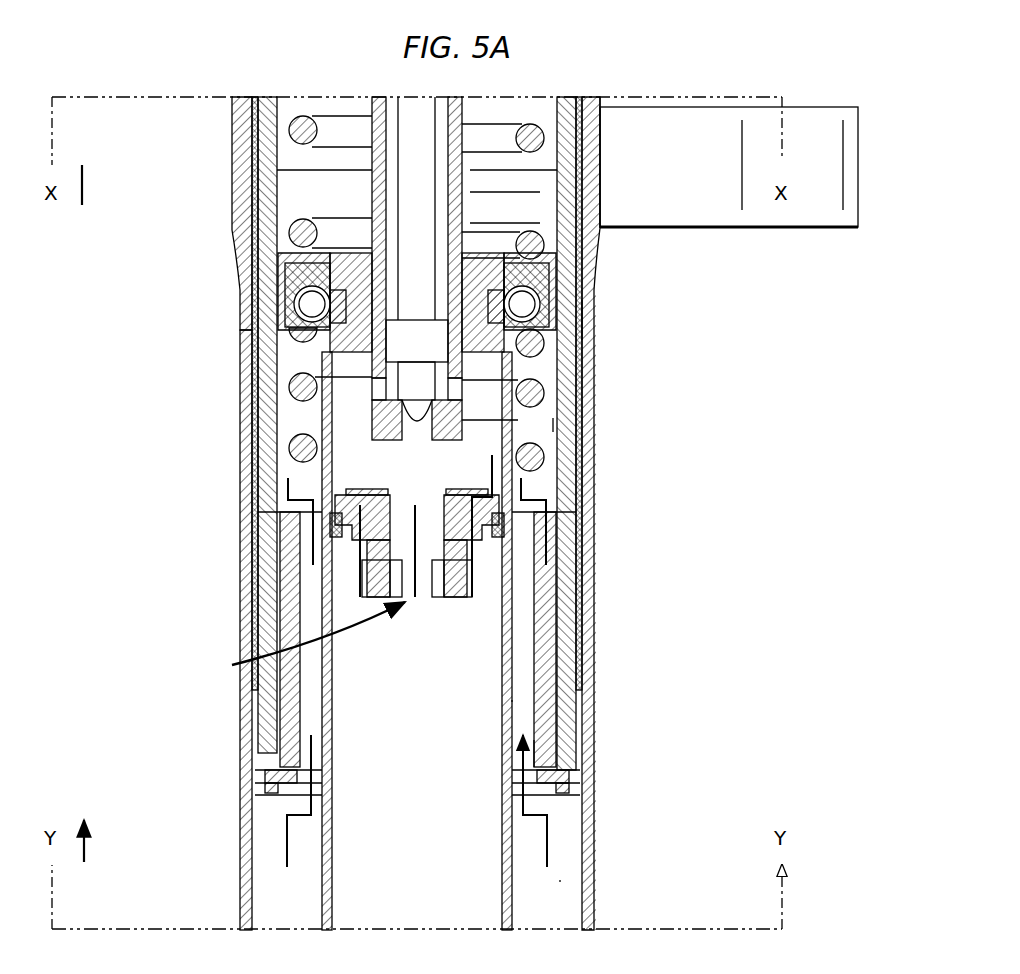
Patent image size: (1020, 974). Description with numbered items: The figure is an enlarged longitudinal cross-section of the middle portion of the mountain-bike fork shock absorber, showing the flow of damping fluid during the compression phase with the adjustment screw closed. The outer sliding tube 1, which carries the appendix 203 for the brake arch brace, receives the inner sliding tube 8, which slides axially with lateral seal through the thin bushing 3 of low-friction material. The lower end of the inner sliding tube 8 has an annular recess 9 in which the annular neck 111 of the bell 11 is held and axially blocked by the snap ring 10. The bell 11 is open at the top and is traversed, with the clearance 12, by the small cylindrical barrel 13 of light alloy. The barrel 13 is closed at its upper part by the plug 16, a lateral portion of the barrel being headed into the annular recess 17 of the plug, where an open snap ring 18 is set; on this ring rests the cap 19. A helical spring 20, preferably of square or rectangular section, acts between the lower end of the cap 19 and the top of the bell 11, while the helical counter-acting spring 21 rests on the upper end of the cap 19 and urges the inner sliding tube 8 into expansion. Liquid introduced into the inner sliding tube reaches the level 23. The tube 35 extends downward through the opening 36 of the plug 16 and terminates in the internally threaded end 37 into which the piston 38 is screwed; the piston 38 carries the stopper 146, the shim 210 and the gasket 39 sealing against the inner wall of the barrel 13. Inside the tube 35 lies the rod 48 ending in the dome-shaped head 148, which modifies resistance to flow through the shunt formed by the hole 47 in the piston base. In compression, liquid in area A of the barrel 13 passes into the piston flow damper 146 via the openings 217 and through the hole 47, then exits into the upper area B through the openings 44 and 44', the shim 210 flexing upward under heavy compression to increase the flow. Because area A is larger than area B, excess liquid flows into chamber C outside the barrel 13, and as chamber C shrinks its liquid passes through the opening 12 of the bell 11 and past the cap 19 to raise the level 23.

The outer sliding tube 1 is at (588, 905).
The thin bushing 3 is at (586, 598).
The inner sliding tube 8 is at (560, 628).
The annular recess 9 is at (556, 775).
The snap ring 10 is at (550, 788).
The bell 11 is at (547, 710).
The clearance 12 is at (492, 503).
The barrel 13 is at (504, 660).
The plug 16 is at (237, 262).
The annular recess 17 is at (322, 292).
The open snap ring 18 is at (585, 319).
The cap 19 is at (527, 303).
The helical spring 20 is at (290, 446).
The helical counter-acting spring 21 is at (545, 139).
The liquid level 23 is at (455, 208).
The tube 35 is at (522, 222).
The opening 36 is at (465, 252).
The internally threaded end 37 is at (322, 435).
The piston 38 is at (470, 405).
The gasket 39 is at (506, 520).
The opening 44 is at (515, 380).
The opening 44' is at (282, 382).
The hole 47 is at (232, 664).
The rod 48 is at (424, 183).
The annular neck 111 is at (550, 752).
The stopper 146 is at (472, 577).
The cylindrical/dome shaped head 148 is at (420, 343).
The appendix for brake arch brace 203 is at (828, 230).
The shim 210 is at (548, 462).
The openings 217 is at (472, 552).
The area A is at (490, 700).
The area B is at (555, 425).
The chamber C is at (567, 877).